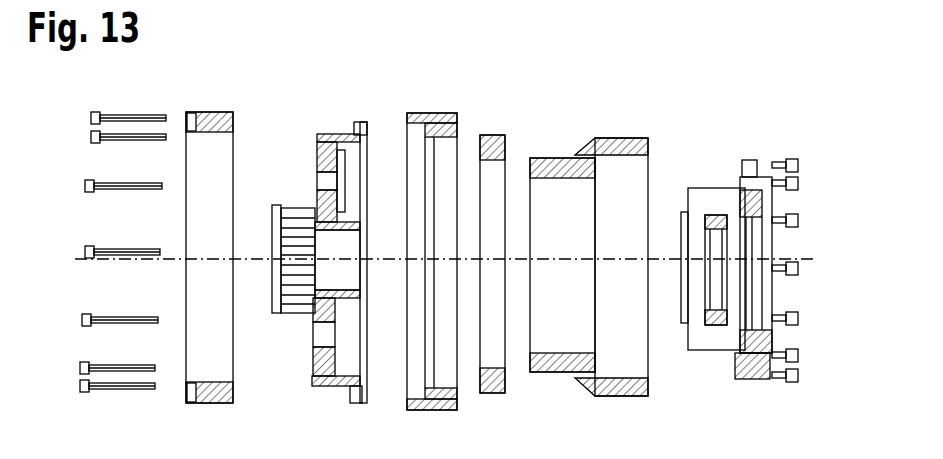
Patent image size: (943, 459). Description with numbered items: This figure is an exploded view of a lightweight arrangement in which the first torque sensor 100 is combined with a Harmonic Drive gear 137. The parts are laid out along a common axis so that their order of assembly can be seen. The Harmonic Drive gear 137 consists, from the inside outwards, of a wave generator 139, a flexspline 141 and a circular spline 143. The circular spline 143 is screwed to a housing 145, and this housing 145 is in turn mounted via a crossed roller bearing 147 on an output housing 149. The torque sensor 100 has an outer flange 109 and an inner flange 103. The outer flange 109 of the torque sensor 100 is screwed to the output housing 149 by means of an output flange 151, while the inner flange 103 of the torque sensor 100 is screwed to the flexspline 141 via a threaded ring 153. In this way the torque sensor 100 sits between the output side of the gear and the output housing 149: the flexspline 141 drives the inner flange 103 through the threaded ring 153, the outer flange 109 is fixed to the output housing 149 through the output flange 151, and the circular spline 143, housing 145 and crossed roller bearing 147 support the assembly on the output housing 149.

The output flange 151 is at (208, 112).
The first torque sensor 100 is at (311, 226).
The outer flange 109 is at (316, 158).
The inner flange 103 is at (312, 320).
The output housing 149 is at (432, 113).
The crossed roller bearing 147 is at (492, 135).
The housing 145 is at (615, 137).
The Harmonic Drive gear 137 is at (843, 65).
The flexspline 141 is at (712, 188).
The circular spline 143 is at (757, 165).
The wave generator 139 is at (772, 165).
The threaded ring 153 is at (716, 330).